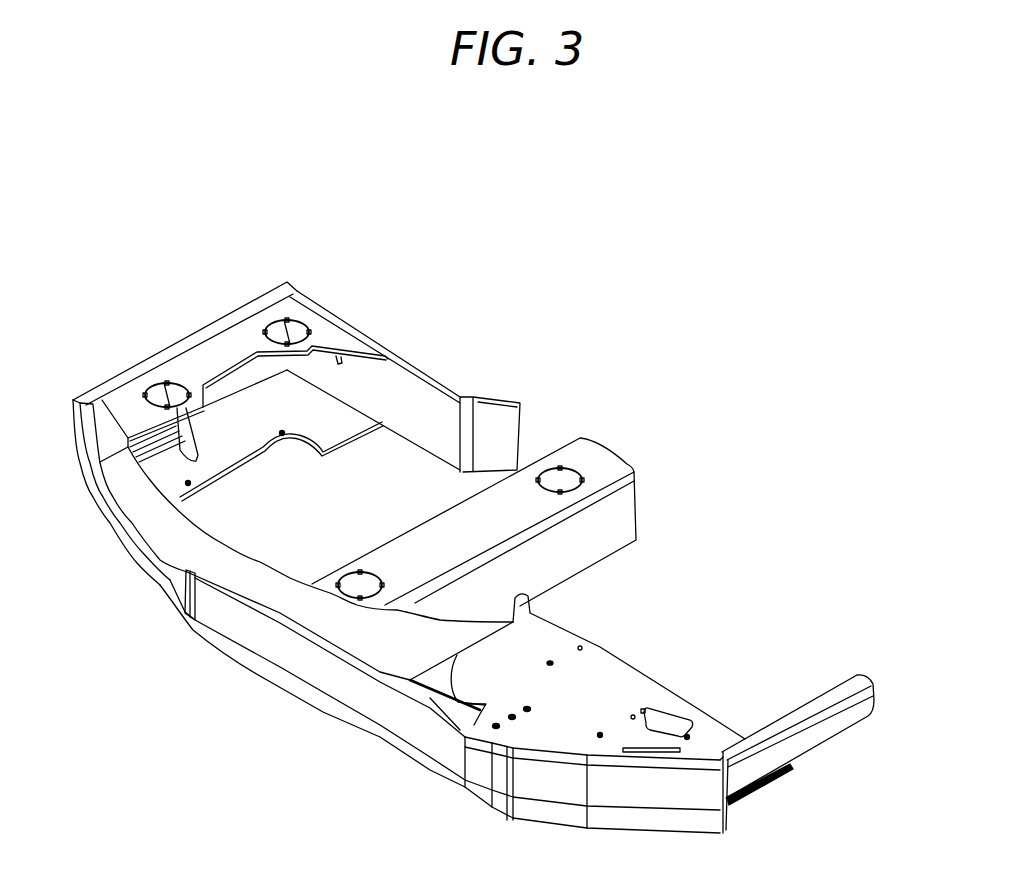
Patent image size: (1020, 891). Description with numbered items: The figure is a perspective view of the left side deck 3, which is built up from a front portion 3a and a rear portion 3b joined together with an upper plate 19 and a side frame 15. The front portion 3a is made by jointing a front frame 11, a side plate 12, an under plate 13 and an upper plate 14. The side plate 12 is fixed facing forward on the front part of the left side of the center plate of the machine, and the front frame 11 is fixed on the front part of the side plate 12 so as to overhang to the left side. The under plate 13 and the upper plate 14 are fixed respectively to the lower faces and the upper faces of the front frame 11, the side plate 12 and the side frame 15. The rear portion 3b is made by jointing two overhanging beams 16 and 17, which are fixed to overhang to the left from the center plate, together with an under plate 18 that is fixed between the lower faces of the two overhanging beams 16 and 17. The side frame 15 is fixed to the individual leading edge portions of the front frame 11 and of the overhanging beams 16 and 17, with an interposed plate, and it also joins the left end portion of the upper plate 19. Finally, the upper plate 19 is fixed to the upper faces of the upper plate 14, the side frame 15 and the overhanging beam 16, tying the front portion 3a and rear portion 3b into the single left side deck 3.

The left side deck 3 is at (247, 288).
The front portion 3a is at (358, 302).
The rear portion 3b is at (600, 607).
The front frame 11 is at (172, 343).
The side plate 12 is at (407, 362).
The under plate 13 is at (257, 462).
The upper plate 14 is at (122, 400).
The side frame 15 is at (324, 710).
The overhanging beam 16 is at (601, 447).
The overhanging beam 17 is at (873, 686).
The under plate 18 is at (645, 684).
The upper plate 19 is at (262, 560).